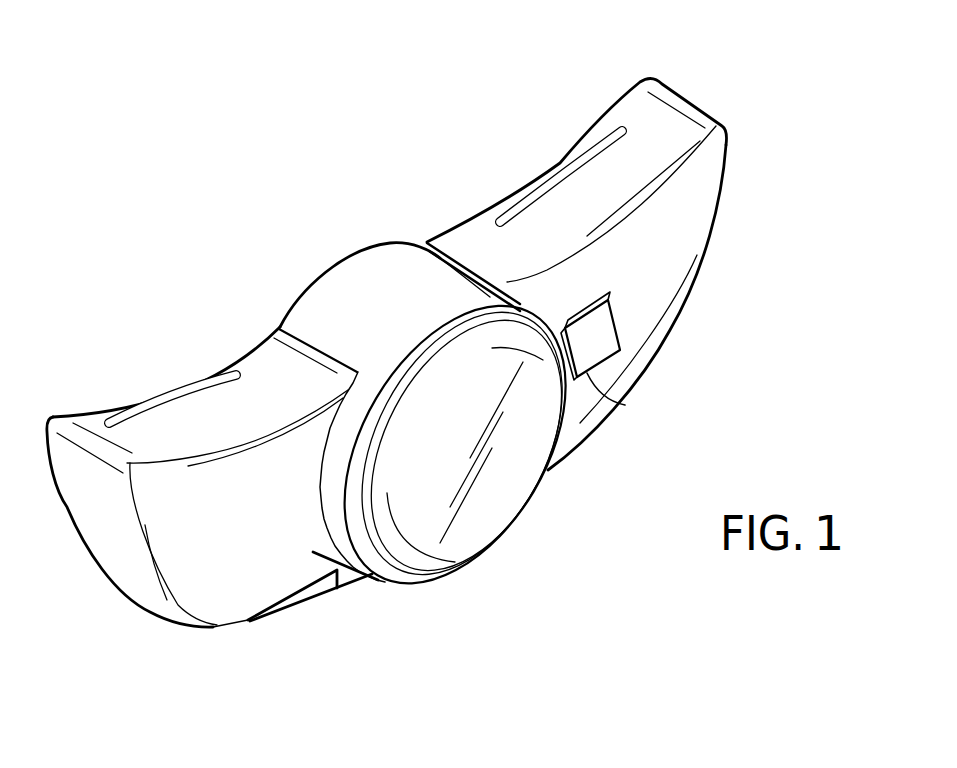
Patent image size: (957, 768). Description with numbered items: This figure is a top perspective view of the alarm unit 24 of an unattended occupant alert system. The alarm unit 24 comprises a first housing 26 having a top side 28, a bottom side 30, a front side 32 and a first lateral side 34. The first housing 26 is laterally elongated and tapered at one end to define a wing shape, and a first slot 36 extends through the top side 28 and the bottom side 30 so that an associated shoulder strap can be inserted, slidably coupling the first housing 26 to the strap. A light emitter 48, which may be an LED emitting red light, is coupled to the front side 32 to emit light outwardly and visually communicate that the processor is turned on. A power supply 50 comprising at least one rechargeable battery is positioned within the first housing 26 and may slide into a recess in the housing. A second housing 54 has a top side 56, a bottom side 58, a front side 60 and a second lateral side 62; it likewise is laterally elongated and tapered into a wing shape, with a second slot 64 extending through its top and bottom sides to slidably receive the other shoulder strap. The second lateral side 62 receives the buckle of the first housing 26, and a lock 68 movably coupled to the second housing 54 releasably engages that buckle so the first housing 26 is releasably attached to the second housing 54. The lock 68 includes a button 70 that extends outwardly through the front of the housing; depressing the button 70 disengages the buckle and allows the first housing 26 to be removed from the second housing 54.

The alarm unit 24 is at (324, 212).
The first housing 26 is at (257, 340).
The top side 28 is at (148, 433).
The bottom side 30 is at (212, 628).
The front side 32 is at (370, 578).
The first lateral side 34 is at (445, 272).
The first slot 36 is at (193, 388).
The light emitter 48 is at (495, 530).
The power supply 50 is at (310, 598).
The second housing 54 is at (612, 108).
The top side 56 is at (478, 242).
The bottom side 58 is at (650, 370).
The front side 60 is at (667, 307).
The second lateral side 62 is at (428, 256).
The second slot 64 is at (549, 180).
The lock 68 is at (627, 405).
The button 70 is at (612, 323).